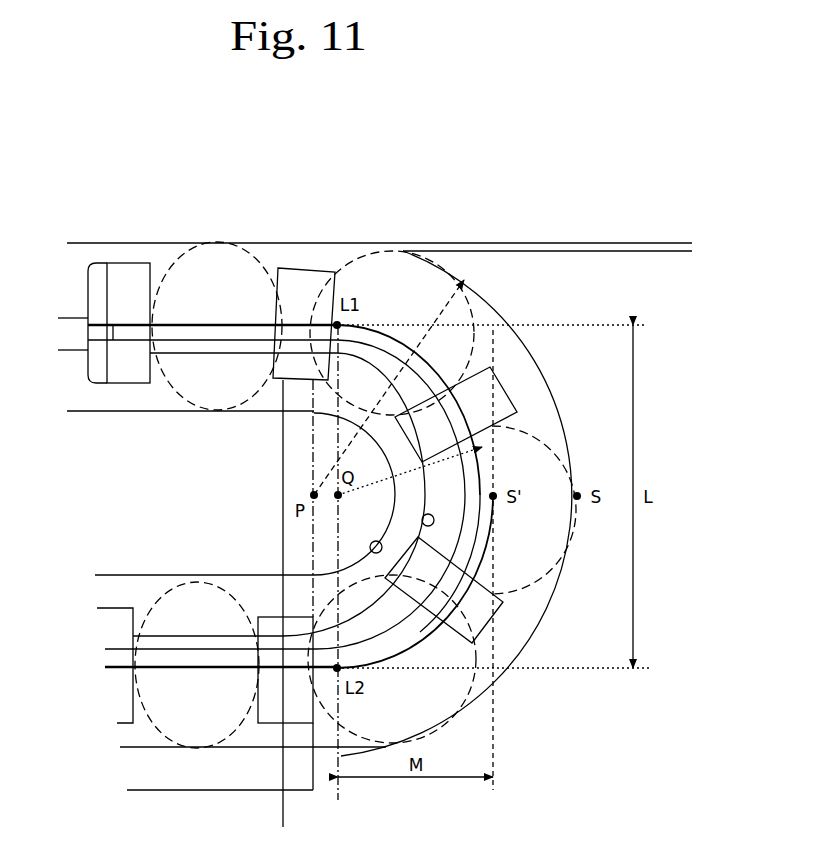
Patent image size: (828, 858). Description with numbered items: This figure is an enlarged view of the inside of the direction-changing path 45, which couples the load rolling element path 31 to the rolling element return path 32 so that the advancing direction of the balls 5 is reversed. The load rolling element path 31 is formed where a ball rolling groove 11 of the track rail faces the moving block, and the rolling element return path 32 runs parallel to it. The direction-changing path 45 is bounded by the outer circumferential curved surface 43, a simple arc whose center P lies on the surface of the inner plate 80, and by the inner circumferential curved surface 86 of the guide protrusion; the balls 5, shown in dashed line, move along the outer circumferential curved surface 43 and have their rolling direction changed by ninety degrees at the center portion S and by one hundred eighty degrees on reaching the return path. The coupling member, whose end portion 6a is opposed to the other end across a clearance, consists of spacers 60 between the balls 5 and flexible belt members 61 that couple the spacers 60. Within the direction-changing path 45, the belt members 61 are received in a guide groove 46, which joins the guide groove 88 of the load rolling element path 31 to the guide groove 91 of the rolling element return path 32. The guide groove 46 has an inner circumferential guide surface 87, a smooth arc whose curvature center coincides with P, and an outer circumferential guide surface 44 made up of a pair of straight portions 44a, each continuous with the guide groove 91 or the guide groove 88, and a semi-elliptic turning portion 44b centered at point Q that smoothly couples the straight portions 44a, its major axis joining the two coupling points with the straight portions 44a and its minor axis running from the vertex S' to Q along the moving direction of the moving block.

The ball 5 is at (207, 240).
The end portion of the coupling member 6a is at (90, 278).
The ball rolling groove 11 is at (597, 250).
The load rolling element path 31 is at (140, 253).
The rolling element return path 32 is at (245, 748).
The outer circumferential curved surface 43 is at (545, 612).
The outer circumferential guide surface 44 is at (370, 178).
The straight portion 44a is at (298, 320).
The turning portion 44b is at (372, 323).
The direction-changing path 45 is at (543, 588).
The guide groove 46 is at (423, 370).
The spacer 60 is at (505, 405).
The belt member 61 is at (393, 640).
The inner plate 80 is at (282, 456).
The inner circumferential curved surface 86 is at (371, 547).
The inner circumferential guide surface 87 is at (422, 519).
The guide groove 88 is at (70, 341).
The guide groove 91 is at (190, 642).